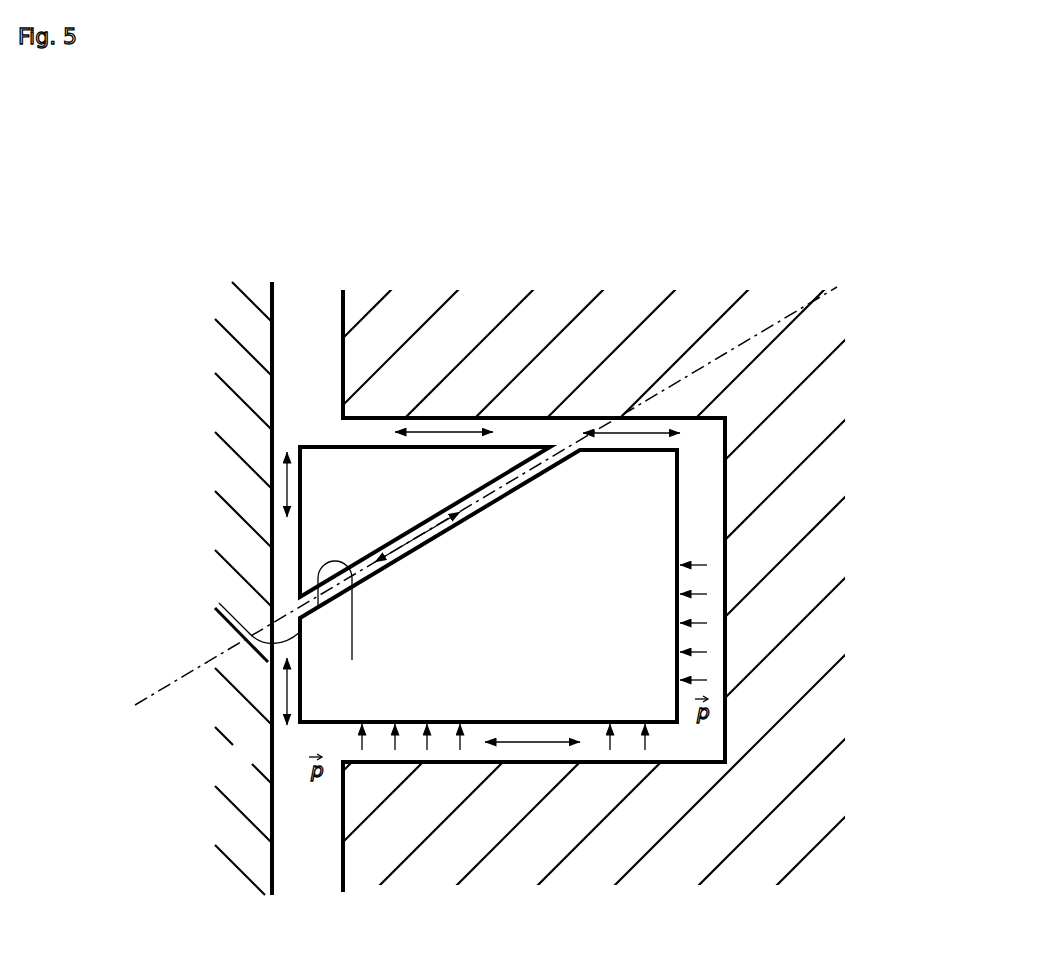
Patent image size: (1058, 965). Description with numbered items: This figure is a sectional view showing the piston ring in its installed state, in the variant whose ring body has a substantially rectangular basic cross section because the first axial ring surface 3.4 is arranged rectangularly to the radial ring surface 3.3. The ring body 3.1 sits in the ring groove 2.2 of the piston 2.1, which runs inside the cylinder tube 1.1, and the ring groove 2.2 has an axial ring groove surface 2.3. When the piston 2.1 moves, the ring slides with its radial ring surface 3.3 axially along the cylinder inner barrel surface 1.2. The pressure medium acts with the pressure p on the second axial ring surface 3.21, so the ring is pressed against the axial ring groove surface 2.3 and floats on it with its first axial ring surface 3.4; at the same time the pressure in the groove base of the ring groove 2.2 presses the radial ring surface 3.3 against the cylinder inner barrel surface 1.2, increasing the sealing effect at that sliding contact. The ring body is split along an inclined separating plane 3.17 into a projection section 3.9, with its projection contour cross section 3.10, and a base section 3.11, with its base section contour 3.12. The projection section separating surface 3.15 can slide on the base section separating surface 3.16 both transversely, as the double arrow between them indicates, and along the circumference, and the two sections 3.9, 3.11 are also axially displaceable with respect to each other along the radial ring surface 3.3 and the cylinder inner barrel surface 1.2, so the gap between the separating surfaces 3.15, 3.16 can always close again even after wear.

The cylinder tube 1.1 is at (229, 780).
The cylinder inner barrel surface 1.2 is at (274, 345).
The piston 2.1 is at (726, 830).
The ring groove 2.2 is at (712, 543).
The axial ring groove surface 2.3 is at (372, 420).
The ring body 3.1 is at (222, 620).
The radial ring surface 3.3 is at (268, 660).
The first axial ring surface 3.4 is at (512, 445).
The projection section 3.9 is at (367, 503).
The projection contour cross section 3.10 is at (313, 427).
The base section 3.11 is at (613, 678).
The base section contour 3.12 is at (690, 603).
The projection section separating surface 3.15 is at (505, 490).
The base section separating surface 3.16 is at (350, 660).
The separating plane 3.17 is at (464, 515).
The second axial ring surface 3.21 is at (590, 722).